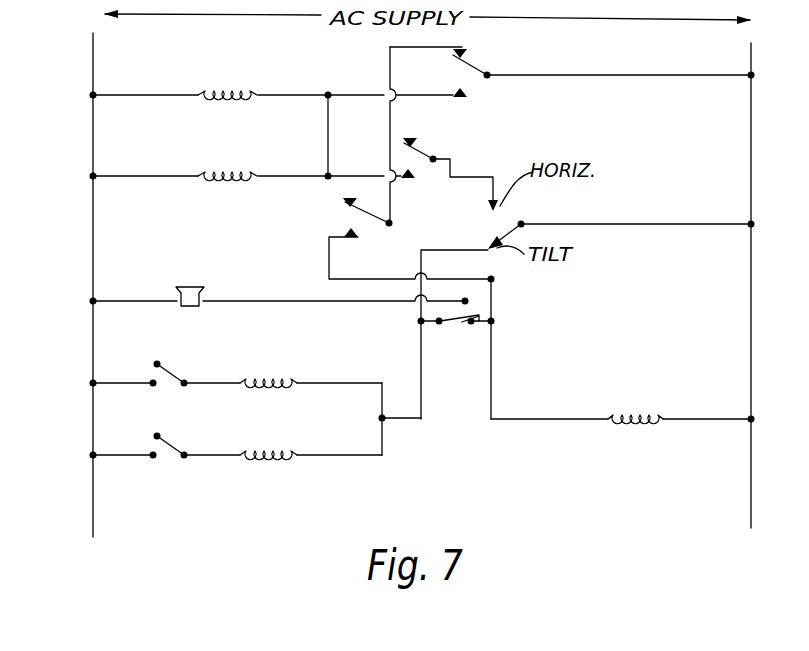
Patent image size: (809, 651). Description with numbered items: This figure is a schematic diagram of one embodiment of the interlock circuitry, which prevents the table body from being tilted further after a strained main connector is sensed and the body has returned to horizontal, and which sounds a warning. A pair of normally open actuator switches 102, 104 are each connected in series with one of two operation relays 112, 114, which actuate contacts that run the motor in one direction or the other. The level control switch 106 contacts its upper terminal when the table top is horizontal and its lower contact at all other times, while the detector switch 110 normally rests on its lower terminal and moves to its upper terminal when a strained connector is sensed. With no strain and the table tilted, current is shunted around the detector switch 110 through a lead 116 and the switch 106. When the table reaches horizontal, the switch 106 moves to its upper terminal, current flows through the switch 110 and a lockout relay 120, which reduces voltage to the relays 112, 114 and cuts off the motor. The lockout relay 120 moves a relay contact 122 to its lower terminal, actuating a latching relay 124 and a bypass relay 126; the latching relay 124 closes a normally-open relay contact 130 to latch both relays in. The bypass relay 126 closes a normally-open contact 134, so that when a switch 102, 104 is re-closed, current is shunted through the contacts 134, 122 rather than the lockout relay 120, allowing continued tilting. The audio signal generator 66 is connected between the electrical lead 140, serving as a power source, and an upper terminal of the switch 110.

The audio signal generator 66 is at (191, 286).
The actuator switch 102 is at (170, 371).
The actuator switch 104 is at (170, 445).
The level control switch 106 is at (513, 219).
The detector switch 110 is at (462, 330).
The operation relay 112 is at (271, 376).
The operation relay 114 is at (271, 451).
The lead 116 is at (428, 263).
The lockout relay 120 is at (624, 426).
The relay contact 122 is at (478, 65).
The latching relay 124 is at (205, 88).
The bypass relay 126 is at (212, 170).
The relay contact 130 is at (443, 159).
The relay contact 134 is at (349, 208).
The electrical lead 140 is at (93, 352).